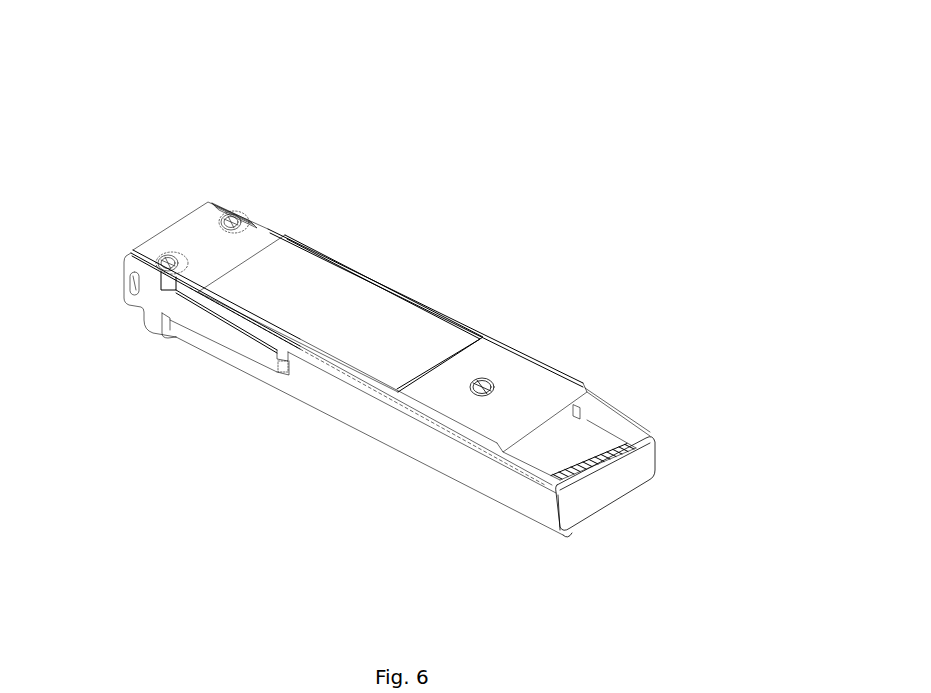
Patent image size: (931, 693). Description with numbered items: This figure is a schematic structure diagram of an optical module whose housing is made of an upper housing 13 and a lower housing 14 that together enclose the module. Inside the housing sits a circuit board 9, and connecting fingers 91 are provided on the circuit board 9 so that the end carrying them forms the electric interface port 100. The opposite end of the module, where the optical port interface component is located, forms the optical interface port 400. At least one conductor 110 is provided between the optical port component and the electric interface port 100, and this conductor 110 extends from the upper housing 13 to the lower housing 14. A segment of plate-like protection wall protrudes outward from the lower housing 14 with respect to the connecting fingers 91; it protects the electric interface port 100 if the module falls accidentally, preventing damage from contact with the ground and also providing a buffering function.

The optical interface port 400 is at (426, 334).
The electric interface port 100 is at (412, 444).
The upper housing 13 is at (369, 350).
The conductor 110 is at (413, 450).
The lower housing 14 is at (684, 536).
The circuit board 9 is at (613, 363).
The connecting fingers 91 is at (650, 399).